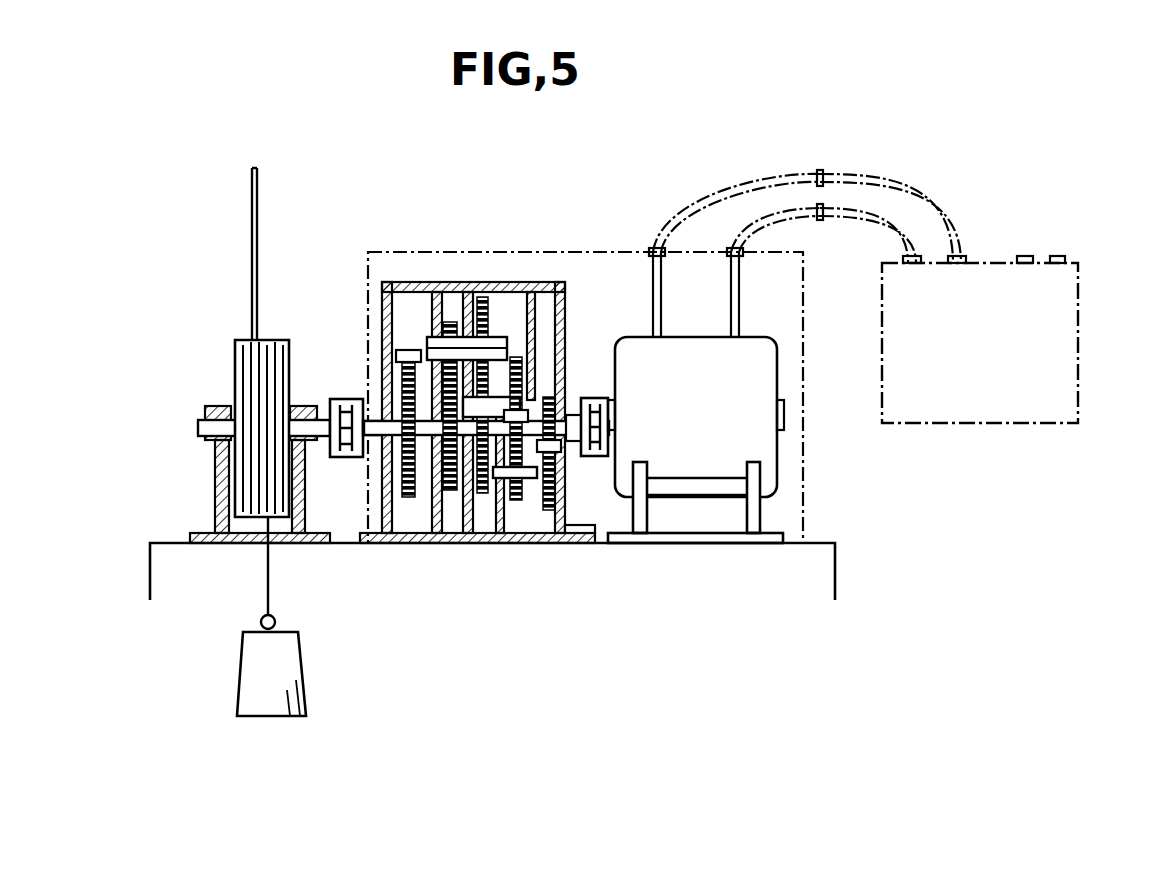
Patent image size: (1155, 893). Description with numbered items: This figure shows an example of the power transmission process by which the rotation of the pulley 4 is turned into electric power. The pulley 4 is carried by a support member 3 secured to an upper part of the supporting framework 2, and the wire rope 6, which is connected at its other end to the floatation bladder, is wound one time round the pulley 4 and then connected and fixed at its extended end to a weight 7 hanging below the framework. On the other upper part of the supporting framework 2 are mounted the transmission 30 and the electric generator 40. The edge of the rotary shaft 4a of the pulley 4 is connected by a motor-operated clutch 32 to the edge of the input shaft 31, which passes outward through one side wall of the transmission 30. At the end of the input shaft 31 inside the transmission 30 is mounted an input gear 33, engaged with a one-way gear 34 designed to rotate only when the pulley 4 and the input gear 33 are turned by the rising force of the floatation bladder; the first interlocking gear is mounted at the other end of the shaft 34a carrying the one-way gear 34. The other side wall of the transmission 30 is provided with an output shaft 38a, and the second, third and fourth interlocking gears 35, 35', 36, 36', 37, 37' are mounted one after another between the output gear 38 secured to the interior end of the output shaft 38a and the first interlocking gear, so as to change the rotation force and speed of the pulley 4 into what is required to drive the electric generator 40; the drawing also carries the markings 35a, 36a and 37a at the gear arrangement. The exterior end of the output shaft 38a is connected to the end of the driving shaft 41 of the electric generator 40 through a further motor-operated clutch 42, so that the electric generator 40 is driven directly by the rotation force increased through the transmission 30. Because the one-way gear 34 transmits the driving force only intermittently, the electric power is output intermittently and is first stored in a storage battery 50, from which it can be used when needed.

The supporting framework 2 is at (158, 572).
The support member 3 is at (216, 487).
The pulley 4 is at (235, 345).
The rotary shaft 4a is at (200, 428).
The wire rope 6 is at (252, 196).
The weight 7 is at (248, 670).
The transmission 30 is at (384, 308).
The input shaft 31 is at (370, 420).
The motor-operated clutch 32 is at (345, 458).
The input gear 33 is at (390, 500).
The one-way gear 34 is at (410, 500).
The shaft 34a is at (408, 350).
The second interlocking gear 35 is at (463, 313).
The gear 35a is at (445, 322).
The second interlocking gear 35' is at (473, 247).
The third interlocking gear 36 is at (504, 523).
The gear 36a is at (540, 395).
The third interlocking gear 36' is at (510, 275).
The fourth interlocking gear 37 is at (569, 516).
The gear shaft 37a is at (530, 478).
The fourth interlocking gear 37' is at (590, 538).
The output gear 38 is at (575, 425).
The output shaft 38a is at (588, 410).
The electric generator 40 is at (775, 488).
The driving shaft 41 is at (606, 398).
The motor-operated clutch 42 is at (605, 545).
The storage battery 50 is at (1082, 345).